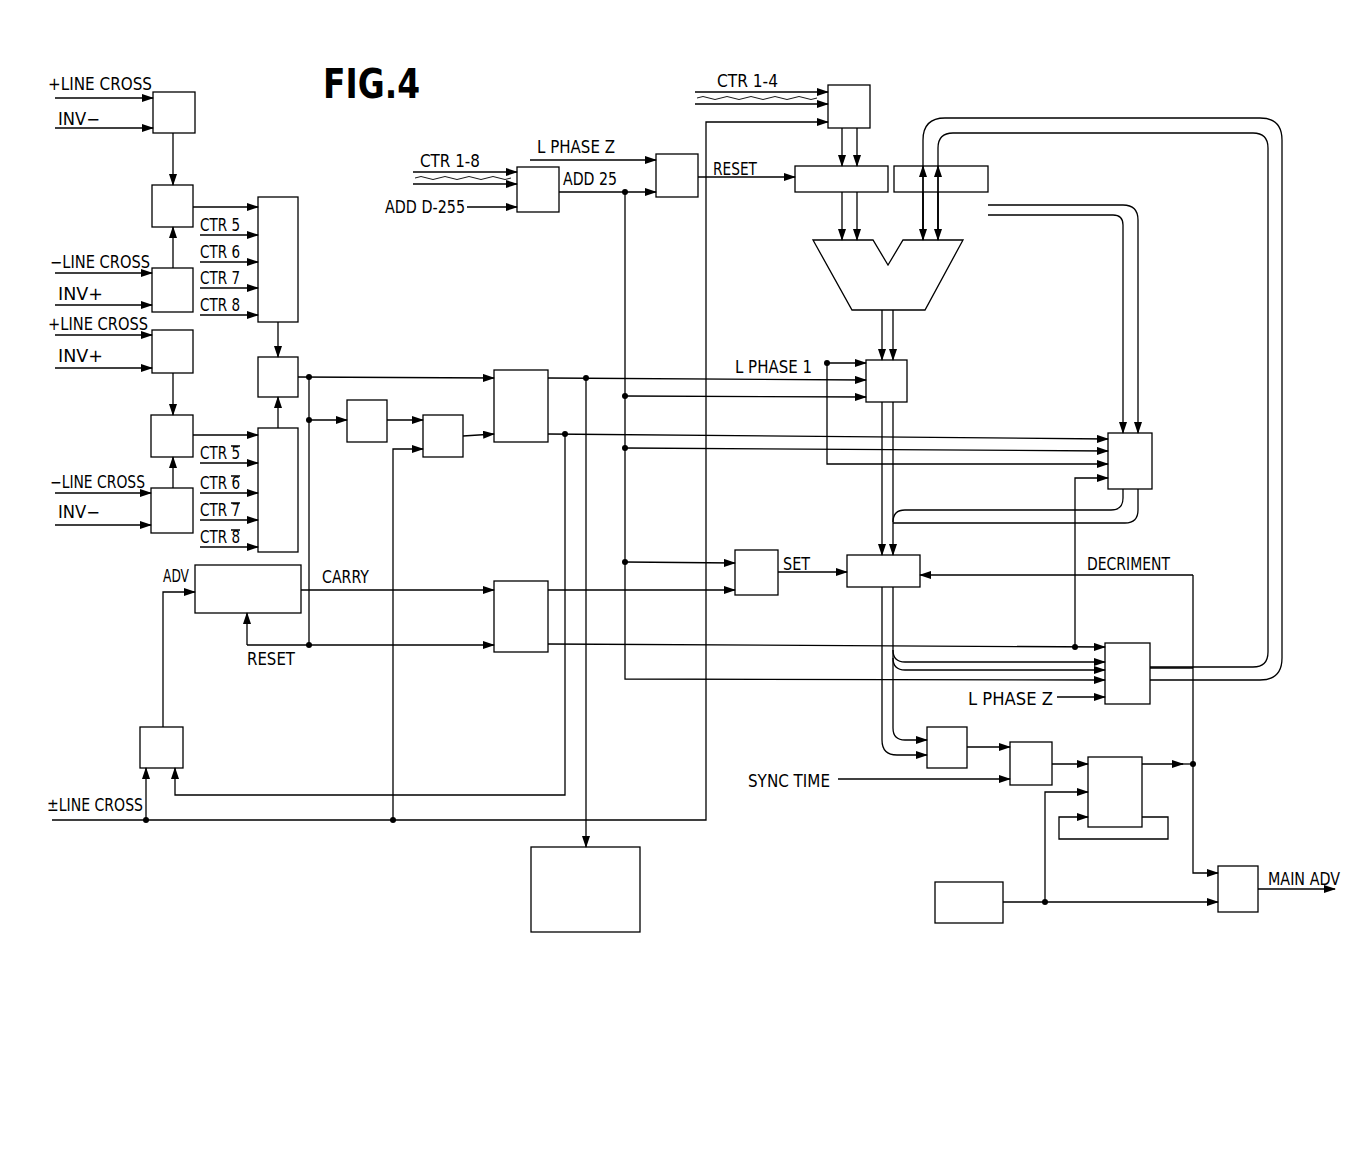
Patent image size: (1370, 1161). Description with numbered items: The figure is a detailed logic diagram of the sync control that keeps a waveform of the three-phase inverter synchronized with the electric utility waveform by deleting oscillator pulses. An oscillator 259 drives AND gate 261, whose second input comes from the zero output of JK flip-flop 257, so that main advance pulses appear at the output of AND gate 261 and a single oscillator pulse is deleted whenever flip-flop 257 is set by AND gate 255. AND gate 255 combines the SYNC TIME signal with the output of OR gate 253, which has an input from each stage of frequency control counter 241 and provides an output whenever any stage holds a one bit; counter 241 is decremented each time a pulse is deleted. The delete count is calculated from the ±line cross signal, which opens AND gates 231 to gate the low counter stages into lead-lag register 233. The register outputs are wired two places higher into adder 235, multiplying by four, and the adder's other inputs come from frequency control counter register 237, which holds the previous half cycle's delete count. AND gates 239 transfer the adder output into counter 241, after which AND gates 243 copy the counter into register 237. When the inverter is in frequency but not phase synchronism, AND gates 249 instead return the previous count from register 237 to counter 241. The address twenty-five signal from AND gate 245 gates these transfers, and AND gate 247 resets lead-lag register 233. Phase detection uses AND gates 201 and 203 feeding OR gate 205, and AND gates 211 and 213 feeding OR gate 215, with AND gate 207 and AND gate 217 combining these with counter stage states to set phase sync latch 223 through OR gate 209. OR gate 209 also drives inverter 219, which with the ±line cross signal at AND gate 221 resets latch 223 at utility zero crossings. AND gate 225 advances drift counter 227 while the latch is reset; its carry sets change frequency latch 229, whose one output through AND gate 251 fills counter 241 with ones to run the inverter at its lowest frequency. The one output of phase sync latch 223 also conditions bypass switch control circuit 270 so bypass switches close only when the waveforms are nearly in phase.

The AND gate 201 is at (195, 118).
The AND gate 203 is at (160, 268).
The OR gate 205 is at (152, 187).
The AND gate 207 is at (298, 290).
The OR gate 209 is at (258, 373).
The AND gate 211 is at (193, 345).
The AND gate 213 is at (157, 533).
The OR gate 215 is at (151, 420).
The AND gate 217 is at (260, 428).
The inverter 219 is at (360, 442).
The AND gate 221 is at (455, 415).
The phase sync latch 223 is at (535, 442).
The AND gate 225 is at (142, 727).
The drift counter 227 is at (230, 613).
The change frequency latch 229 is at (537, 652).
The AND gates 231 is at (870, 118).
The lead-lag register 233 is at (812, 192).
The adder 235 is at (828, 272).
The frequency control counter register 237 is at (988, 167).
The AND gates 239 is at (907, 380).
The frequency control counter 241 is at (865, 587).
The AND gates 243 is at (1125, 643).
The AND gate 245 is at (540, 212).
The AND gate 247 is at (672, 154).
The AND gates 249 is at (1152, 460).
The AND gate 251 is at (778, 550).
The OR gate 253 is at (945, 727).
The AND gate 255 is at (1025, 785).
The JK flip-flop 257 is at (1130, 757).
The oscillator 259 is at (990, 882).
The AND gate 261 is at (1240, 866).
The bypass switch control circuit 270 is at (531, 880).